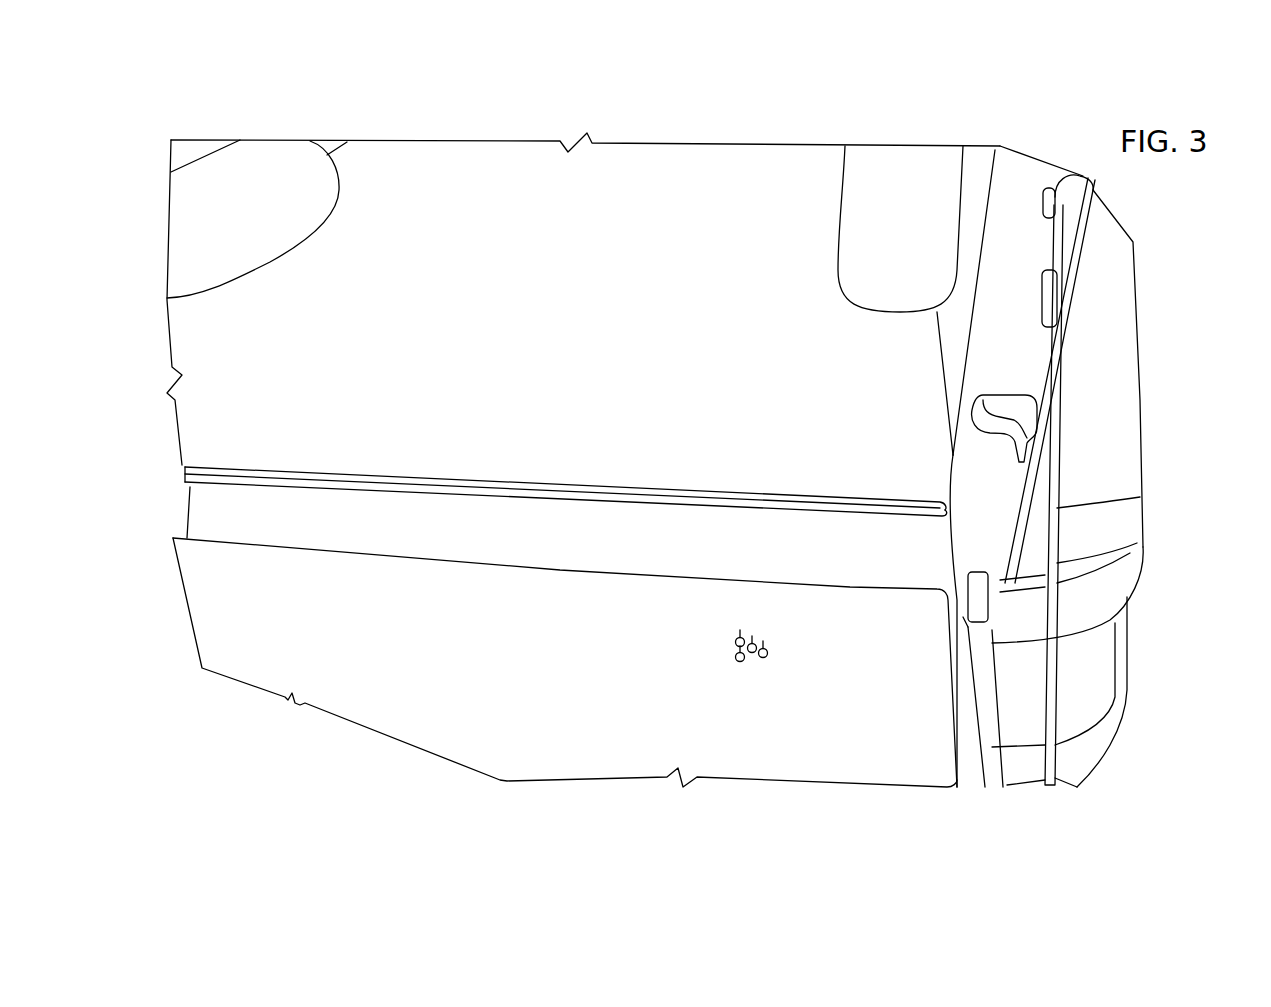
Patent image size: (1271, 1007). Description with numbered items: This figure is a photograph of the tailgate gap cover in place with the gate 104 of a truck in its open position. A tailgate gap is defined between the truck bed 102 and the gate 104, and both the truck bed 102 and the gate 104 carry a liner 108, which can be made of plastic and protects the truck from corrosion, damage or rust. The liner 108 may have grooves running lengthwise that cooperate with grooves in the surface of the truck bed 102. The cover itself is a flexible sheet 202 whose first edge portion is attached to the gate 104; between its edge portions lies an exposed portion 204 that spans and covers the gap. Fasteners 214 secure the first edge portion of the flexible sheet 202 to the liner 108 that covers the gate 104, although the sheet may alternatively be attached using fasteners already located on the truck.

The truck bed 102 is at (866, 418).
The gate 104 is at (877, 707).
The liner 108 is at (400, 462).
The flexible sheet 202 is at (806, 552).
The exposed portion 204 is at (597, 548).
The fasteners 214 is at (757, 670).